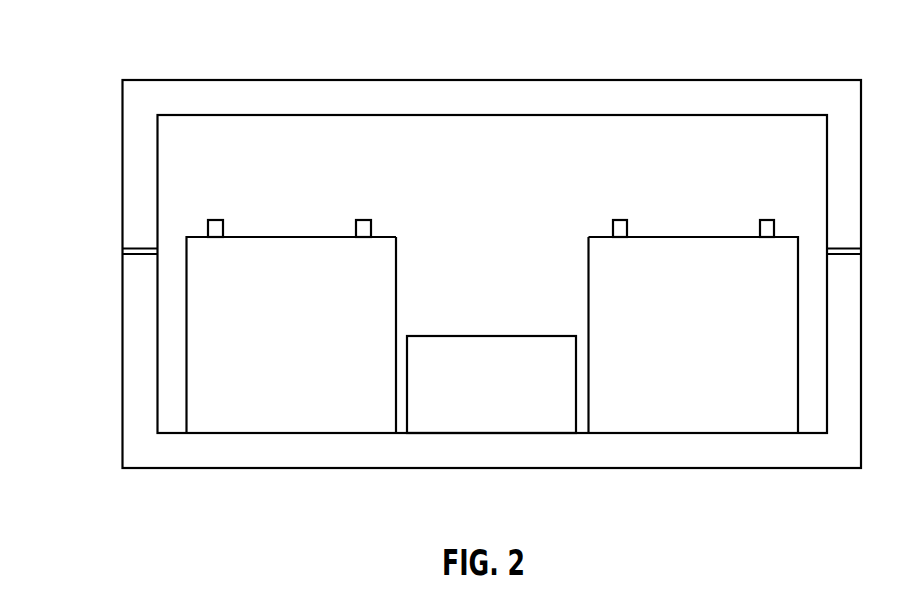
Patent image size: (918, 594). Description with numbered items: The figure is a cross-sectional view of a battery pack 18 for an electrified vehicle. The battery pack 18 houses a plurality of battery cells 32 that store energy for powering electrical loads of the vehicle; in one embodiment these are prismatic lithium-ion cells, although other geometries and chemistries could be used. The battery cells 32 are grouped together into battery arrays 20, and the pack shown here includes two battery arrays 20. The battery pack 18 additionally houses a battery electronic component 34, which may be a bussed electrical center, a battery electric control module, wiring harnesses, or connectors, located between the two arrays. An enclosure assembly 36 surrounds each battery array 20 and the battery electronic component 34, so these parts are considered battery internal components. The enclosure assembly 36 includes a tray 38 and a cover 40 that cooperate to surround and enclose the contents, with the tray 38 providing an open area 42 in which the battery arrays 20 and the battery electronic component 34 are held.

The battery pack 18 is at (462, 273).
The battery array 20 is at (271, 192).
The battery cell 32 is at (392, 270).
The battery electronic component 34 is at (515, 423).
The enclosure assembly 36 is at (446, 276).
The tray 38 is at (257, 453).
The cover 40 is at (199, 93).
The open area 42 is at (508, 312).